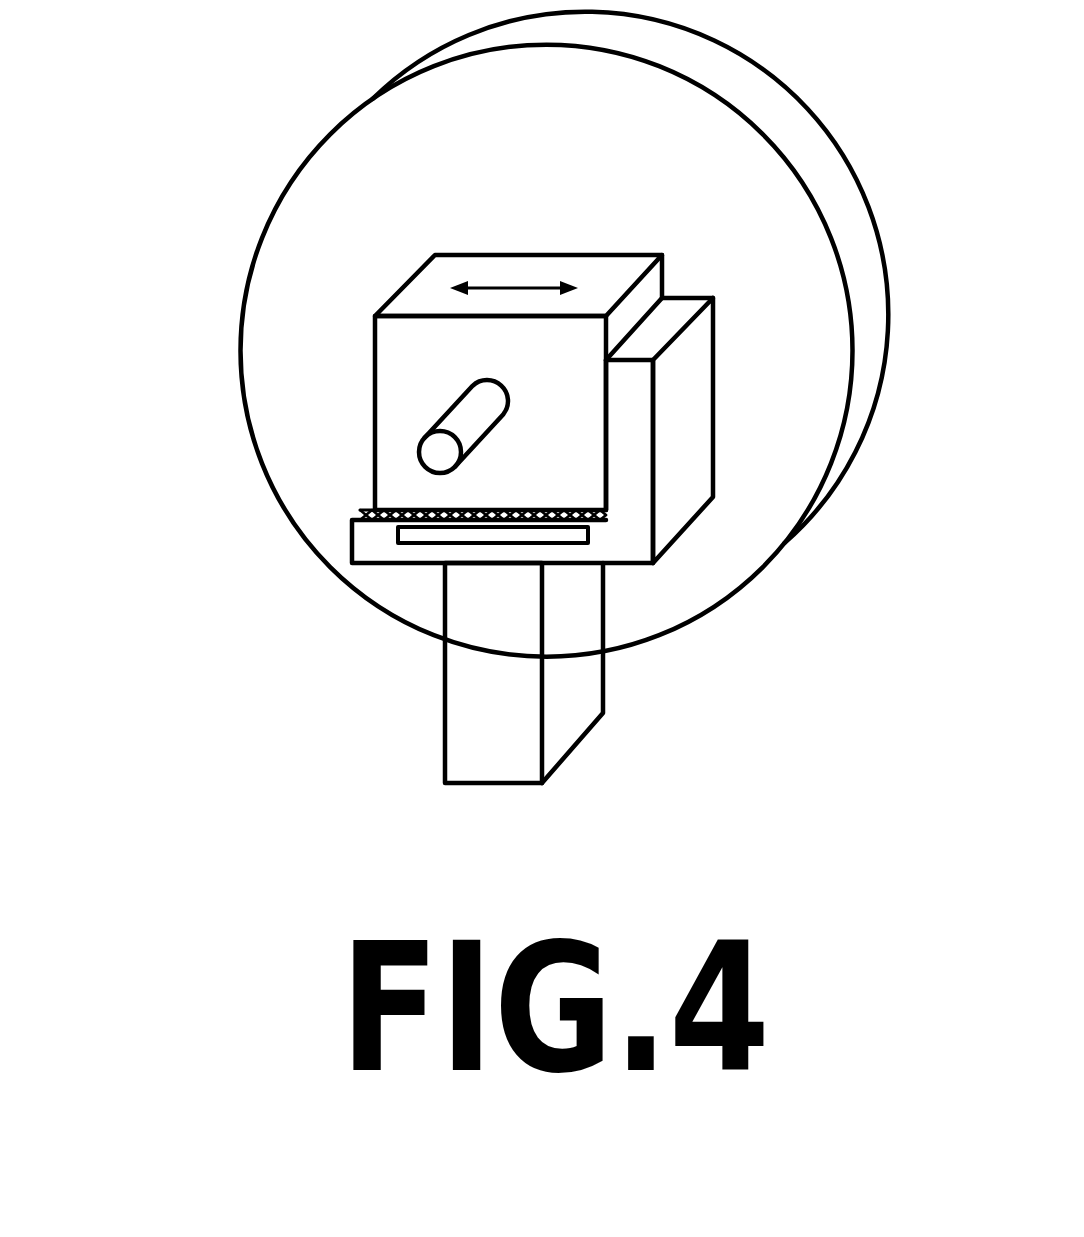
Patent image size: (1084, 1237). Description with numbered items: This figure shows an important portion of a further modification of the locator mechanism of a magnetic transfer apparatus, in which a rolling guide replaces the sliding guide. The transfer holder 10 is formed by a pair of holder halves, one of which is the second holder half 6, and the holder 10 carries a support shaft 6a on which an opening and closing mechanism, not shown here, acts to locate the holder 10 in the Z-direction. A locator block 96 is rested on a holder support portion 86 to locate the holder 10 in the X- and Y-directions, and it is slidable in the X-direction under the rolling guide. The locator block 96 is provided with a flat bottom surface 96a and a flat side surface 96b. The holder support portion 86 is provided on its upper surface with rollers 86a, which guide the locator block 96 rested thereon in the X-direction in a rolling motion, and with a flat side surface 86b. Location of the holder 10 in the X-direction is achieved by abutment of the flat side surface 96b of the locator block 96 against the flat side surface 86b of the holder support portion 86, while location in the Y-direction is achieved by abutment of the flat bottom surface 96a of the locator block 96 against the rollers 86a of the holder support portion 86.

The transfer holder 10 is at (790, 65).
The second holder half 6 is at (320, 188).
The support shaft 6a is at (450, 412).
The locator block 96 is at (522, 240).
The flat bottom surface 96a is at (423, 513).
The flat side surface 96b is at (640, 297).
The holder support portion 86 is at (683, 525).
The rollers 86a is at (475, 527).
The flat side surface 86b is at (600, 428).